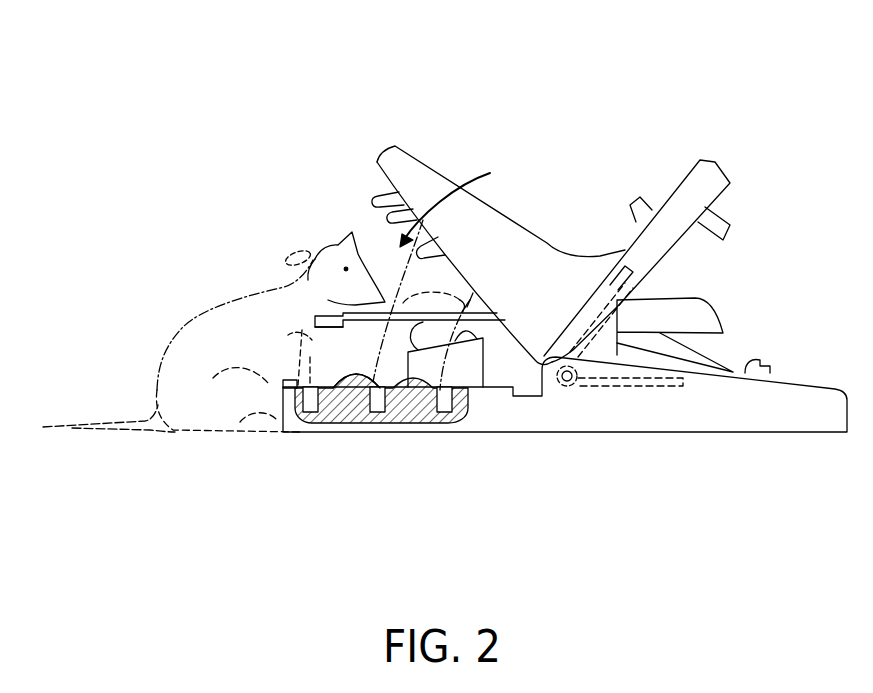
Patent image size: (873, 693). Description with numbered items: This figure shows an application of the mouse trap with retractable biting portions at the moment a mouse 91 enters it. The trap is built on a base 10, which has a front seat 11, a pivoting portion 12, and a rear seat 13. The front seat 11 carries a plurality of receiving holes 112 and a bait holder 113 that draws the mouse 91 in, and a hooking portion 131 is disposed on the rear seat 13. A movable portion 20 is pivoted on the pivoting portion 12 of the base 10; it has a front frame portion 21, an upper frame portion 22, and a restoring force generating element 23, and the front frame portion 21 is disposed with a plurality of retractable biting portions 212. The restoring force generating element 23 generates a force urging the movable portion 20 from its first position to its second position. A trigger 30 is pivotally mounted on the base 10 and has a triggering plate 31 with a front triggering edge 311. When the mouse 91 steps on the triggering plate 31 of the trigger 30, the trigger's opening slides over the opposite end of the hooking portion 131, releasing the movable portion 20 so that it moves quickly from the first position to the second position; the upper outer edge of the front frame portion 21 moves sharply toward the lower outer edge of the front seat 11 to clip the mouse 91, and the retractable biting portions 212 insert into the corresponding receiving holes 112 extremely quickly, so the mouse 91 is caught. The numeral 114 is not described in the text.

The base 10 is at (662, 433).
The front seat 11 is at (303, 432).
The receiving holes 112 is at (318, 397).
The bait holder 113 is at (477, 338).
The ribs 114 is at (292, 380).
The pivoting portion 12 is at (565, 410).
The rear seat 13 is at (777, 418).
The hooking portion 131 is at (767, 363).
The movable portion 20 is at (653, 73).
The front frame portion 21 is at (500, 232).
The retractable biting portions 212 is at (380, 223).
The upper frame portion 22 is at (688, 203).
The restoring force generating element 23 is at (612, 278).
The trigger 30 is at (307, 348).
The triggering plate 31 is at (350, 302).
The front triggering edge 311 is at (352, 332).
The mouse 91 is at (158, 364).